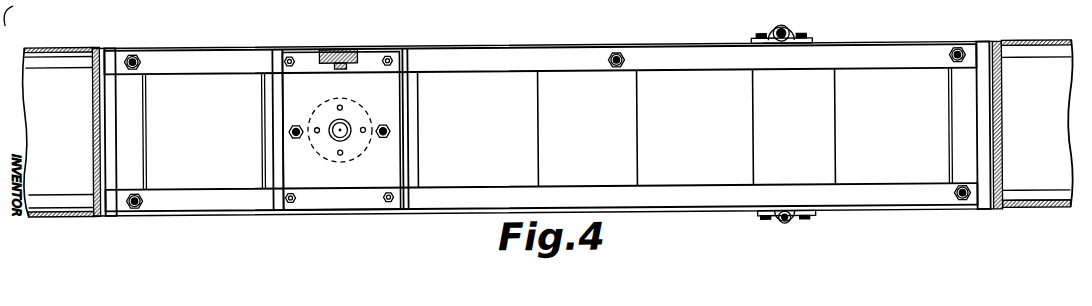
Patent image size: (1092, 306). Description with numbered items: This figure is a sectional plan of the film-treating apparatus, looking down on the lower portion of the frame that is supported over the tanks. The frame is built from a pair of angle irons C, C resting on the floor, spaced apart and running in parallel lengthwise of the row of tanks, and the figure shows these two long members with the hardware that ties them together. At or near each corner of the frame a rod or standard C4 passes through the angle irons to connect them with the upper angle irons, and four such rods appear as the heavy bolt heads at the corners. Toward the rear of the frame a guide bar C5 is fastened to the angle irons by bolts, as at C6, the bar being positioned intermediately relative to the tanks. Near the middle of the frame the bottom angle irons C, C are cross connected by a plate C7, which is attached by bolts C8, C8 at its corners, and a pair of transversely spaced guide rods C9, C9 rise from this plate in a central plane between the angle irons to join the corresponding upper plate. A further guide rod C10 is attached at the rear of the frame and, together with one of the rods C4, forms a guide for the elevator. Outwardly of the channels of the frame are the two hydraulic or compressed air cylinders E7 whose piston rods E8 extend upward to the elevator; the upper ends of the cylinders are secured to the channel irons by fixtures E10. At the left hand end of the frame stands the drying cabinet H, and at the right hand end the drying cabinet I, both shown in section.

The angle irons C is at (503, 66).
The rods or standards C4 is at (136, 57).
The guide bar C5 is at (347, 50).
The bolts C6 is at (320, 51).
The plate C7 is at (341, 131).
The bolts C8 is at (296, 63).
The guide rods C9 is at (289, 133).
The guide rod C10 is at (616, 52).
The hydraulic or compressed air cylinders E7 is at (787, 29).
The piston rods E8 is at (806, 37).
The fixtures E10 is at (763, 37).
The drying cabinet H is at (78, 58).
The drying cabinet I is at (1032, 124).